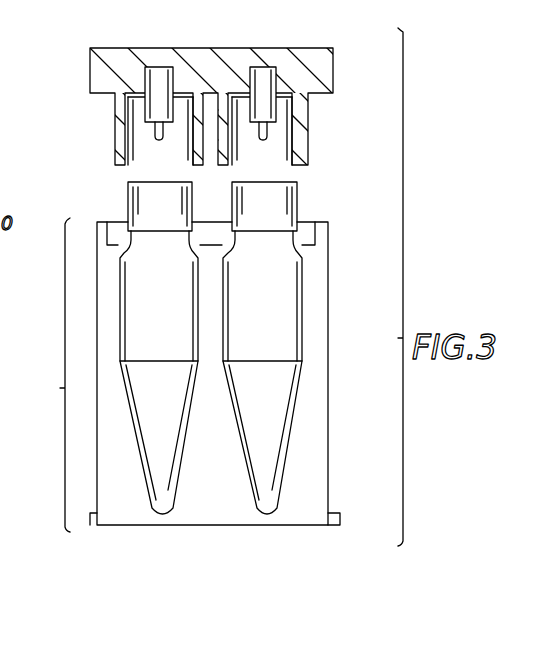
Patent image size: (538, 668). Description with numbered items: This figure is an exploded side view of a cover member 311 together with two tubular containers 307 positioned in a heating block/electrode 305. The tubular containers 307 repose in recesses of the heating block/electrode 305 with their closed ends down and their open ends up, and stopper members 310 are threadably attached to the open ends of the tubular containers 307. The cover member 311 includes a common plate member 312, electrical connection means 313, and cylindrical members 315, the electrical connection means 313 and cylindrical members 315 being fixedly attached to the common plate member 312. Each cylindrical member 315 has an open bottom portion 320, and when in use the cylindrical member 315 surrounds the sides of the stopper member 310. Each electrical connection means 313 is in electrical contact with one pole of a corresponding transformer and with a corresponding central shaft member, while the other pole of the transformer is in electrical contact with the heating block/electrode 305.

The heating block/electrode 305 is at (60, 388).
The tubular containers 307 is at (247, 453).
The stopper members 310 is at (128, 205).
The cover member 311 is at (82, 59).
The common plate member 312 is at (333, 68).
The electrical connection means 313 is at (153, 81).
The cylindrical members 315 is at (113, 125).
The open bottom portion 320 is at (138, 158).